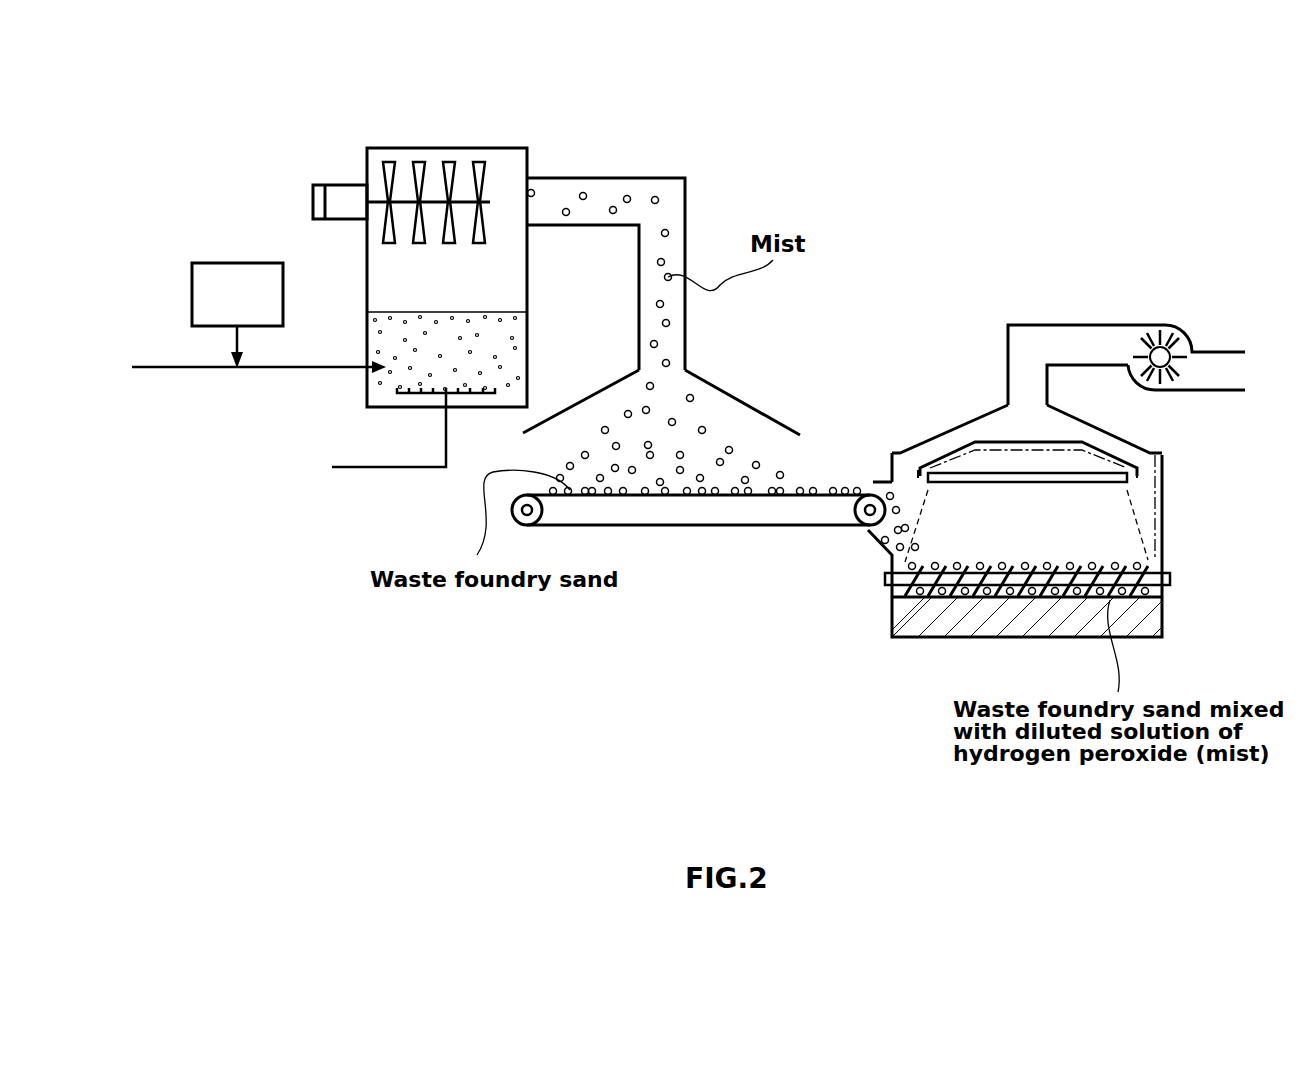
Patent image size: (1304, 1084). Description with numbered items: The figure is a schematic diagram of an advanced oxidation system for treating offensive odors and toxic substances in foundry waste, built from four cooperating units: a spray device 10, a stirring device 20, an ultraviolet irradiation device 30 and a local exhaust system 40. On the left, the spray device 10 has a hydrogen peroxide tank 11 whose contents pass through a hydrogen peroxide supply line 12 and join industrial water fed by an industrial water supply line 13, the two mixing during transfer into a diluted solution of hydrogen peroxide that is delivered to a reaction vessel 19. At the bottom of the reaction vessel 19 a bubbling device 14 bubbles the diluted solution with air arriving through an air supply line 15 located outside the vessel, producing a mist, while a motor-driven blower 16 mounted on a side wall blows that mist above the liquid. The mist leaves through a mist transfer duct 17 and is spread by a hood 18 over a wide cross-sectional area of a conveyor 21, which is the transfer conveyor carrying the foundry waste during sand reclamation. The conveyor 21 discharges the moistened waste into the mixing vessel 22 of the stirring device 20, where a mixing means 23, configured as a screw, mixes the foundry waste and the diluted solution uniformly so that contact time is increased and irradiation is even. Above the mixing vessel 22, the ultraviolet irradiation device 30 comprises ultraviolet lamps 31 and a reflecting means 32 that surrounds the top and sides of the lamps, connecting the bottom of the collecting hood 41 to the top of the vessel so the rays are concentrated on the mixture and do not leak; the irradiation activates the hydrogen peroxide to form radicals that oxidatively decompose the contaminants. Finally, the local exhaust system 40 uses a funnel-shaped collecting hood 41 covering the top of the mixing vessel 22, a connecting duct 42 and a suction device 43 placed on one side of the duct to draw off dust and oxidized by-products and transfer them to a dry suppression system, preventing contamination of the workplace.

The spray device 10 is at (318, 132).
The hydrogen peroxide tank 11 is at (237, 263).
The hydrogen peroxide supply line 12 is at (240, 340).
The industrial water supply line 13 is at (183, 370).
The bubbling device 14 is at (477, 397).
The air supply line 15 is at (380, 468).
The blower 16 is at (415, 160).
The mist transfer duct 17 is at (587, 178).
The hood 18 is at (737, 398).
The reaction vessel 19 is at (462, 148).
The stirring device 20 is at (893, 672).
The conveyor 21 is at (710, 508).
The mixing vessel 22 is at (1140, 617).
The mixing means 23 is at (905, 580).
The ultraviolet irradiation device 30 is at (1125, 451).
The ultraviolet lamps 31 is at (992, 473).
The reflecting means 32 is at (953, 448).
The local exhaust system 40 is at (1198, 300).
The collecting hood 41 is at (1112, 432).
The connecting duct 42 is at (1070, 325).
The suction device 43 is at (1165, 355).